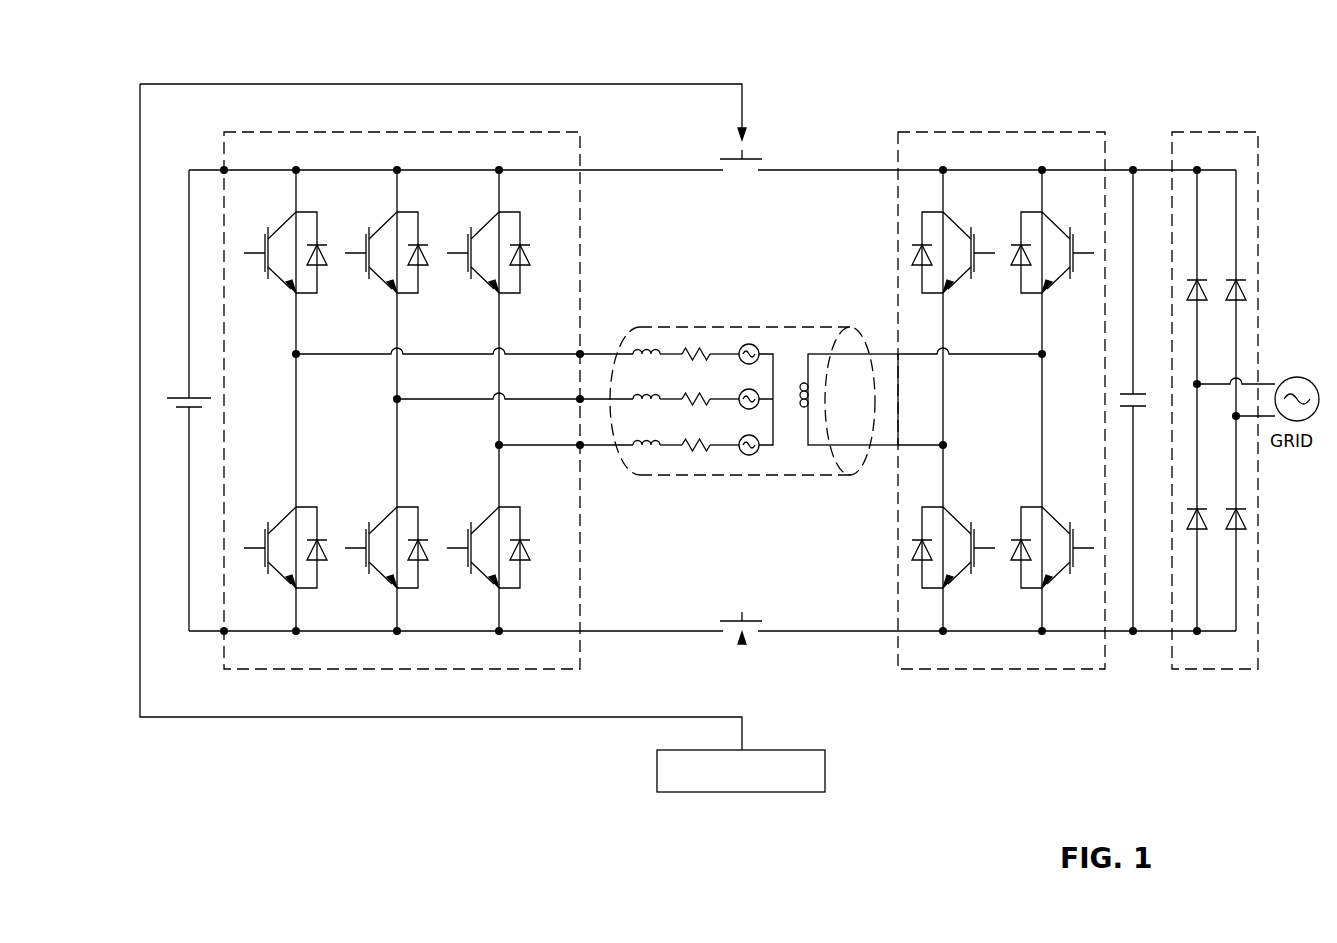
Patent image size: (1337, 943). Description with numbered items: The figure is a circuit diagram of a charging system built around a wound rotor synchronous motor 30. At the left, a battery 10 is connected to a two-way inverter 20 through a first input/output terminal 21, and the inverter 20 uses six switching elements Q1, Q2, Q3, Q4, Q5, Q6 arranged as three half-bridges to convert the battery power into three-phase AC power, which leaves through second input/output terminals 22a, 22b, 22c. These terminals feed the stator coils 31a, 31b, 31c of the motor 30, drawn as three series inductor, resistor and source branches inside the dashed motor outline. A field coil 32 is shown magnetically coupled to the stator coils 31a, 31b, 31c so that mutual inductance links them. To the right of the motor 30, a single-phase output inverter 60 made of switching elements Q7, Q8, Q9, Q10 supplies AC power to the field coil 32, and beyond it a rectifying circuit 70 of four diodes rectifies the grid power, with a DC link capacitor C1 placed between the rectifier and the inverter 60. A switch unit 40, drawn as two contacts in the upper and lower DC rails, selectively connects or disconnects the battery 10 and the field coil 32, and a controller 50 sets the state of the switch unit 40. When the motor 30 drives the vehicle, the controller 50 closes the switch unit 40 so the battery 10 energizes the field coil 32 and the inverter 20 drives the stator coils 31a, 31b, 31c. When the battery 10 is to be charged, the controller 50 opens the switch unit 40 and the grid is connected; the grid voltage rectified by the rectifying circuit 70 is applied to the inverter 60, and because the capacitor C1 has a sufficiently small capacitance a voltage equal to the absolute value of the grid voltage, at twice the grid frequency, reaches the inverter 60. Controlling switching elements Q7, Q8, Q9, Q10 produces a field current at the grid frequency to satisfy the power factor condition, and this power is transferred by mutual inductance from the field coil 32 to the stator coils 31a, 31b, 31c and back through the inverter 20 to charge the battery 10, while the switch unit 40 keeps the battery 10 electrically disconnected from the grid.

The battery 10 is at (180, 398).
The inverter 20 is at (393, 132).
The first input/output terminal 21 is at (224, 170).
The second input/output terminal 22a is at (580, 354).
The second input/output terminal 22b is at (580, 399).
The second input/output terminal 22c is at (580, 445).
The wound rotor synchronous motor 30 is at (790, 327).
The stator coil 31a is at (648, 354).
The stator coil 31b is at (640, 399).
The stator coil 31c is at (650, 445).
The field coil 32 is at (802, 411).
The switch unit 40 is at (752, 159).
The controller 50 is at (825, 770).
The single-phase output inverter 60 is at (988, 132).
The rectifying circuit 70 is at (1212, 132).
The switching element Q1 is at (285, 259).
The switching element Q2 is at (285, 555).
The switching element Q3 is at (386, 259).
The switching element Q4 is at (386, 555).
The switching element Q5 is at (488, 259).
The switching element Q6 is at (488, 555).
The switching element Q7 is at (1052, 259).
The switching element Q8 is at (953, 555).
The switching element Q9 is at (1052, 555).
The switching element Q10 is at (957, 259).
The DC link capacitor C1 is at (1143, 400).